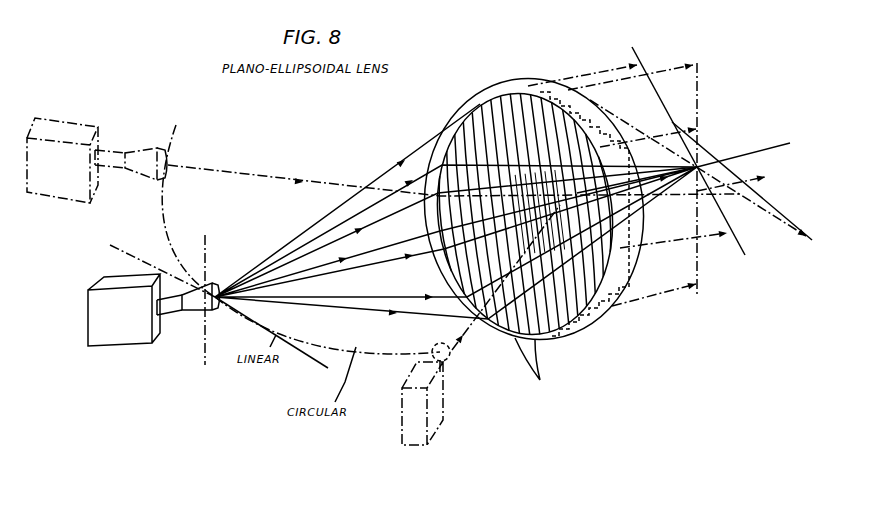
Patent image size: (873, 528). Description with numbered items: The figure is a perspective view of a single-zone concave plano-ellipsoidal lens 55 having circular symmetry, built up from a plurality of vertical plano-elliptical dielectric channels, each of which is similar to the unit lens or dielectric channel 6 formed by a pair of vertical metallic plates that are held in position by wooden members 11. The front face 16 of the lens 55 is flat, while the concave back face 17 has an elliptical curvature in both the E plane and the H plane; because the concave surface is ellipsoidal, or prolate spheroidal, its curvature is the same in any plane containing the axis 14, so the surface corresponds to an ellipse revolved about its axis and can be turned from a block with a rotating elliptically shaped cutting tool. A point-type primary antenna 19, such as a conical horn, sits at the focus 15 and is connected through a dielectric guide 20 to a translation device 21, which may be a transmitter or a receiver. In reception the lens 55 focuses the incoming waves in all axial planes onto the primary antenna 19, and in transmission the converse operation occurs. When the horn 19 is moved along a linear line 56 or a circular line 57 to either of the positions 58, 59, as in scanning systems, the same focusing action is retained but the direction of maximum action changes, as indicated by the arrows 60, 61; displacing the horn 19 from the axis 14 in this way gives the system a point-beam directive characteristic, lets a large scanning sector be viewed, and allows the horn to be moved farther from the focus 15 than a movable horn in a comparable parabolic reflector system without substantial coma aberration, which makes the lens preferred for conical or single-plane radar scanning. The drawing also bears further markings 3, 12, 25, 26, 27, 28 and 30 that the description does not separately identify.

The focal plane 3 is at (632, 48).
The dielectric channel 6 is at (495, 102).
The wooden members 11 is at (527, 88).
The central ray 12 is at (656, 178).
The axis 14 is at (753, 150).
The focus 15 is at (220, 290).
The front face 16 is at (636, 283).
The back face 17 is at (462, 124).
The point-type primary antenna 19 is at (143, 153).
The dielectric guide 20 is at (110, 152).
The translation device 21 is at (72, 128).
The upper ray bundle 25 is at (393, 215).
The lower ray bundle 26 is at (388, 255).
The distance to focal plane 27 is at (596, 78).
The distance to tilted plane 28 is at (754, 183).
The middle ray bundle 30 is at (408, 248).
The plano-ellipsoidal single-zone lens 55 is at (533, 219).
The linear line 56 is at (118, 247).
The circular line 57 is at (165, 215).
The horn position 58 is at (170, 163).
The horn position 59 is at (455, 349).
The arrow 60 is at (771, 232).
The arrow 61 is at (604, 112).